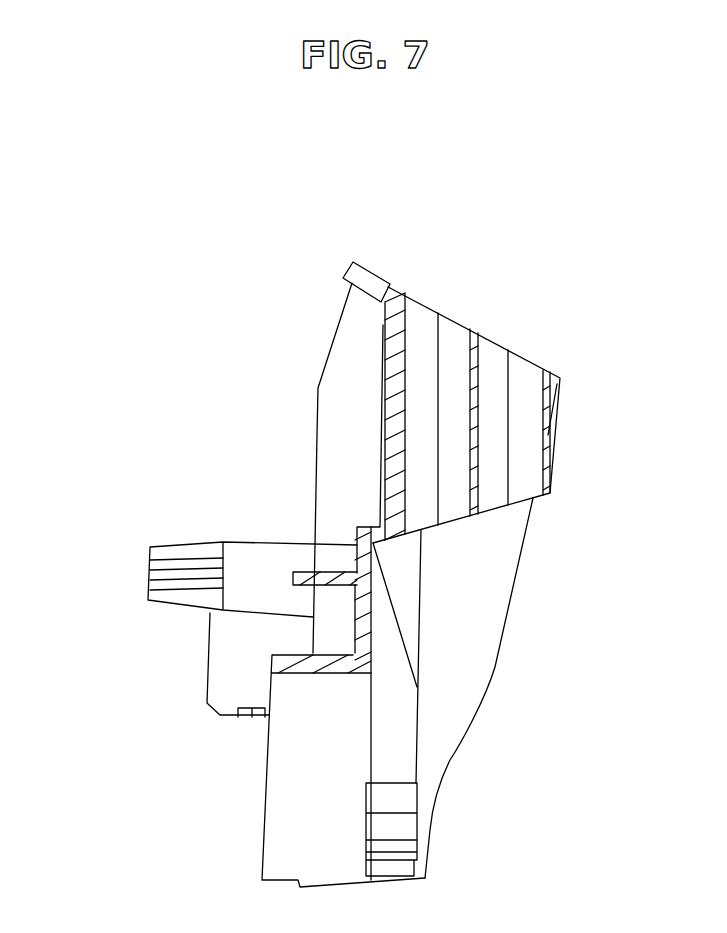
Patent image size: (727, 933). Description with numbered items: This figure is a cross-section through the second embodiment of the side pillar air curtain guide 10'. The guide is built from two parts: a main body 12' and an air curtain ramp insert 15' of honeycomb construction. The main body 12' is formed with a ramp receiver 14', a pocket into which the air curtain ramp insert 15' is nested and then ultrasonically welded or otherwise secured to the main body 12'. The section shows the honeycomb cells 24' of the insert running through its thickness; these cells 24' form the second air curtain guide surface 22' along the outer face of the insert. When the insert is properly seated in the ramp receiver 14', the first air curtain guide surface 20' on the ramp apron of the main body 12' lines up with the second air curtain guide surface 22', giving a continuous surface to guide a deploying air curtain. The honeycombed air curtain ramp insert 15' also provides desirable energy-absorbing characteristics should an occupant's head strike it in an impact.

The side pillar air curtain guide 10' is at (347, 524).
The main body 12' is at (341, 692).
The ramp receiver 14' is at (303, 492).
The air curtain ramp insert 15' is at (492, 352).
The first air curtain guide surface 20' is at (373, 231).
The second air curtain guide surface 22' is at (440, 379).
The honeycomb cells 24' is at (539, 416).